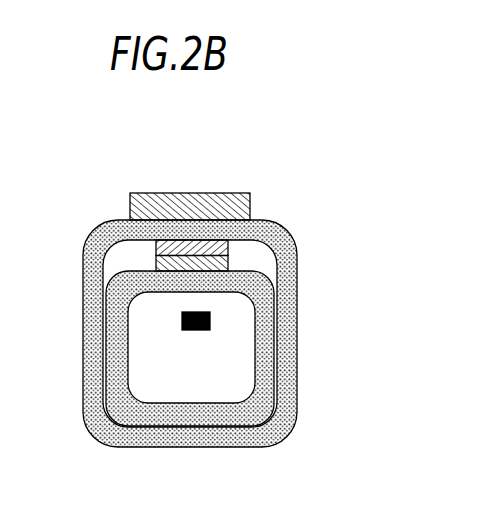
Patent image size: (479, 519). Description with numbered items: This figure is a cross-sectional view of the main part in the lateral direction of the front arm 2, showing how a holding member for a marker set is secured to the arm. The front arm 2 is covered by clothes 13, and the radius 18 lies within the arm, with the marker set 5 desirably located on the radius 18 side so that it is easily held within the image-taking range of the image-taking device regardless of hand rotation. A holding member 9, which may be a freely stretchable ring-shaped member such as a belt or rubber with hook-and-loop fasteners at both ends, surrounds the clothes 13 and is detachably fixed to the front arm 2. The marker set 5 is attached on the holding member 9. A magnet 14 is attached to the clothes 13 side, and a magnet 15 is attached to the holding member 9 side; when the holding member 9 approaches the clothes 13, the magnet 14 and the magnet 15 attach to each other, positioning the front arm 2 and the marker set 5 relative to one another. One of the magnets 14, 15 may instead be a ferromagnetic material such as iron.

The front arm 2 is at (240, 382).
The marker set 5 is at (187, 193).
The holding member 9 is at (275, 222).
The clothes 13 is at (263, 408).
The magnet 14 is at (229, 257).
The magnet 15 is at (228, 242).
The radius 18 is at (180, 320).